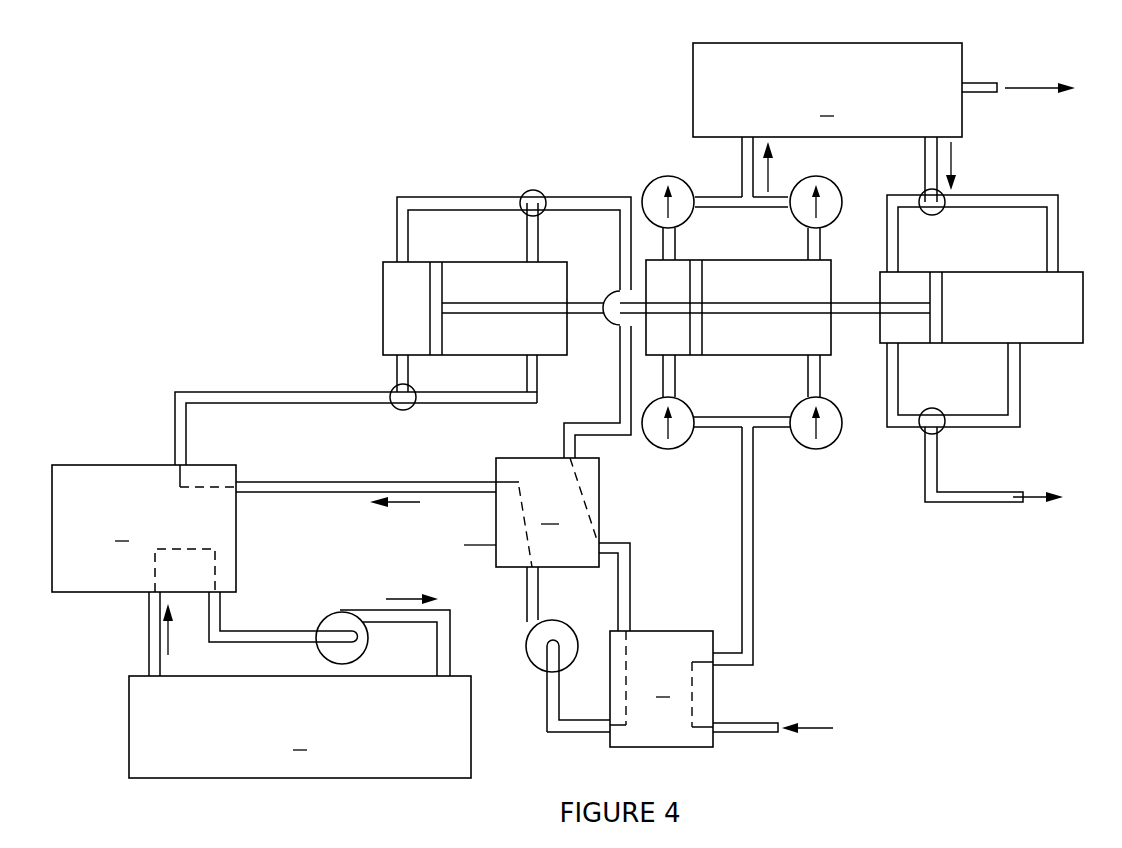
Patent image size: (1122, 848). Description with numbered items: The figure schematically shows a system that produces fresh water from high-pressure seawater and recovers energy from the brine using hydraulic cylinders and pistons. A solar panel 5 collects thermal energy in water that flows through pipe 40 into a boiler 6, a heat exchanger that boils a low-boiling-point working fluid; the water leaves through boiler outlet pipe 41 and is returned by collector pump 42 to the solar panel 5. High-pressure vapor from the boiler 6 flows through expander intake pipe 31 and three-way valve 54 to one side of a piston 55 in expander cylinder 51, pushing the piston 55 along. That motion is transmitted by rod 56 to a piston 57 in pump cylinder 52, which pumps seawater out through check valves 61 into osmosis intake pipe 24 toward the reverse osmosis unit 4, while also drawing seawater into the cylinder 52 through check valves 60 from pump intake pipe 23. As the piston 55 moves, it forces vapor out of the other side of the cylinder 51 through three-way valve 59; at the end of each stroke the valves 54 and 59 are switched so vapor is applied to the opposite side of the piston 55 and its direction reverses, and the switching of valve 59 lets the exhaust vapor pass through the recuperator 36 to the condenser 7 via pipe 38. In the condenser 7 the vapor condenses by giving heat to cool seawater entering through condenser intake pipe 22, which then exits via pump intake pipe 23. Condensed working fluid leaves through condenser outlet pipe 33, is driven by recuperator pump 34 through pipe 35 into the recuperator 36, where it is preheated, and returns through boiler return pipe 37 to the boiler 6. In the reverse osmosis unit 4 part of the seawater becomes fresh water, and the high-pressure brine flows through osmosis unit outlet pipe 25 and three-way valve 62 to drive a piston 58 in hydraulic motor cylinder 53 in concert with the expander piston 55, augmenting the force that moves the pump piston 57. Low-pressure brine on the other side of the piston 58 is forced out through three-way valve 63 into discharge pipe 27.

The reverse osmosis unit 4 is at (884, 84).
The solar panel 5 is at (300, 727).
The boiler 6 is at (144, 528).
The condenser 7 is at (717, 706).
The condenser intake pipe 22 is at (762, 723).
The pump intake pipe 23 is at (753, 582).
The osmosis intake pipe 24 is at (724, 210).
The osmosis unit outlet pipe 25 is at (925, 160).
The discharge pipe 27 is at (957, 492).
The expander intake pipe 31 is at (262, 392).
The condenser outlet pipe 33 is at (585, 735).
The recuperator pump 34 is at (545, 622).
The pipe 35 is at (522, 615).
The recuperator 36 is at (464, 512).
The boiler return pipe 37 is at (447, 481).
The pipe 38 is at (632, 615).
The pipe 40 is at (148, 612).
The boiler outlet pipe 41 is at (292, 630).
The collector pump 42 is at (322, 625).
The expander cylinder 51 is at (545, 262).
The pump cylinder 52 is at (831, 291).
The hydraulic motor cylinder 53 is at (1053, 343).
The three-way valve 54 is at (392, 385).
The piston 55 is at (442, 346).
The rod 56 is at (605, 320).
The piston 57 is at (702, 341).
The piston 58 is at (928, 322).
The three-way valve 59 is at (540, 192).
The check valves 60 is at (695, 406).
The check valves 61 is at (660, 178).
The three-way valve 62 is at (946, 212).
The three-way valve 63 is at (937, 410).